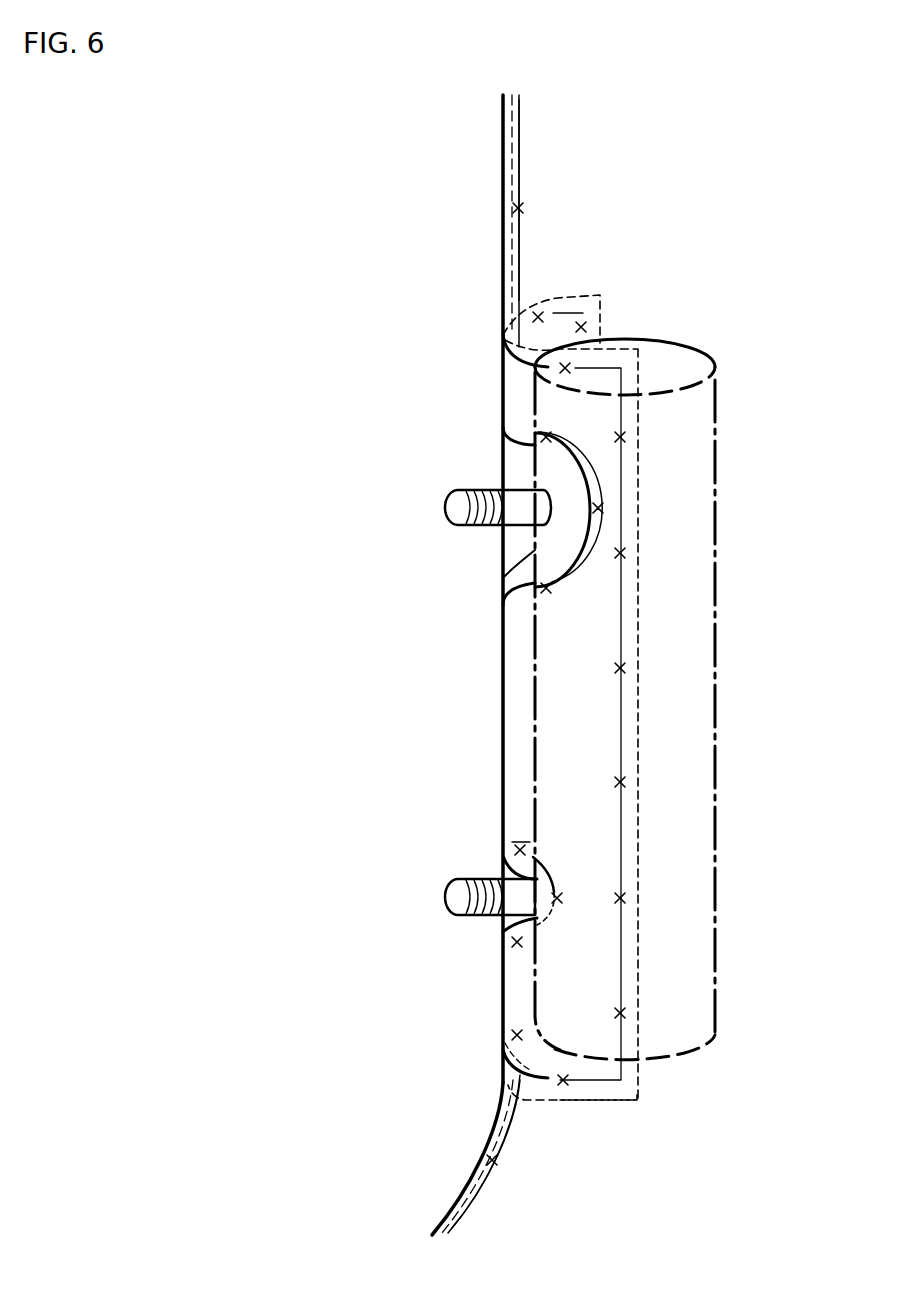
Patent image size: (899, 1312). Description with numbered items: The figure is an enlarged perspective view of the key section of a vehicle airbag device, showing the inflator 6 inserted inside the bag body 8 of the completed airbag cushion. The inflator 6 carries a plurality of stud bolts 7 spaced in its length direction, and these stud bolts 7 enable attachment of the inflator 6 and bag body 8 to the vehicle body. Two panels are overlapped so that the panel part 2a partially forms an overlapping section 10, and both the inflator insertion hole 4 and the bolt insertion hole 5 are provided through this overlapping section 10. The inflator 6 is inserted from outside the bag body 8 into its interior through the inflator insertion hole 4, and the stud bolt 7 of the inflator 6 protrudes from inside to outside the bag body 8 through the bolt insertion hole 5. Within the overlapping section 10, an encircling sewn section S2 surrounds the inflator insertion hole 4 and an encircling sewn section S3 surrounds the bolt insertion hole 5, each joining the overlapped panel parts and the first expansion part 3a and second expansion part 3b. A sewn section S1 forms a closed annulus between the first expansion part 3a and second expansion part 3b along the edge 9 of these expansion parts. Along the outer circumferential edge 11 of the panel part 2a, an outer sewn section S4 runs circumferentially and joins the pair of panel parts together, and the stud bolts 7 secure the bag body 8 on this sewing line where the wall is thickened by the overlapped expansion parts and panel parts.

The panel part 2a is at (725, 217).
The inflator 6 is at (718, 512).
The outer circumferential edge 11 is at (512, 131).
The outer sewn section S4 is at (520, 121).
The second expansion part 3b is at (567, 293).
The first expansion part 3a is at (640, 688).
The sewn section S1 is at (553, 313).
The edge 9 is at (592, 293).
The bag body 8 is at (458, 279).
The inflator insertion hole 4 is at (530, 447).
The encircling sewn section S2 is at (577, 572).
The stud bolt 7 is at (453, 508).
The bolt insertion hole 5 is at (505, 927).
The encircling sewn section S3 is at (508, 848).
The overlapping section 10 is at (650, 1093).